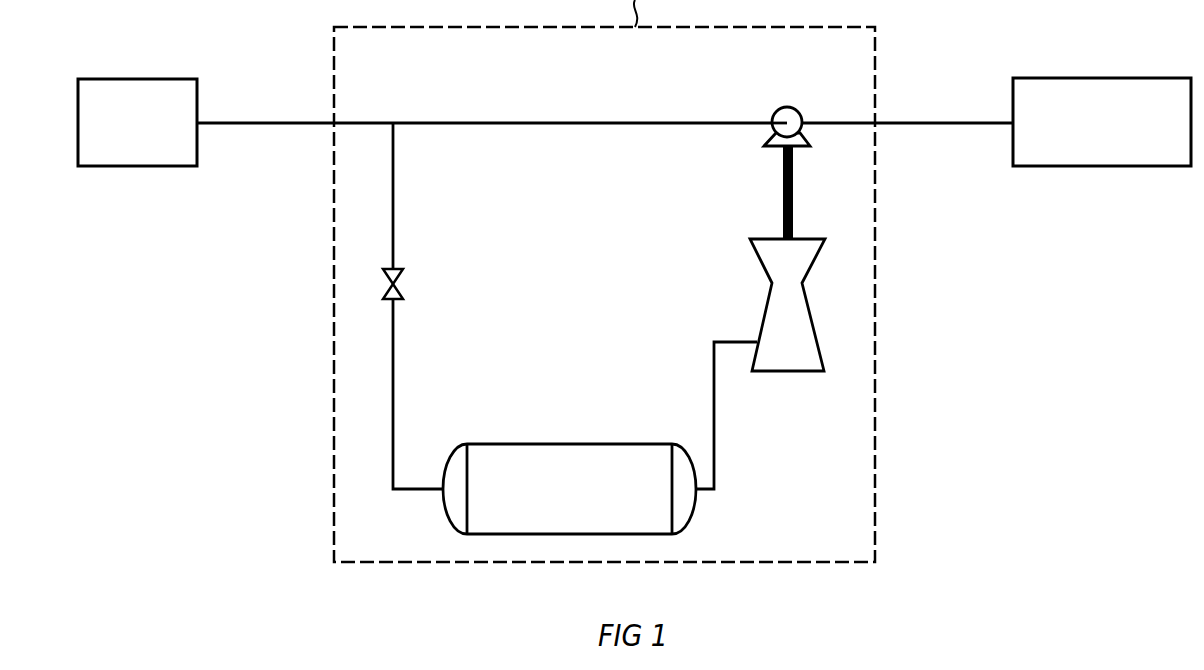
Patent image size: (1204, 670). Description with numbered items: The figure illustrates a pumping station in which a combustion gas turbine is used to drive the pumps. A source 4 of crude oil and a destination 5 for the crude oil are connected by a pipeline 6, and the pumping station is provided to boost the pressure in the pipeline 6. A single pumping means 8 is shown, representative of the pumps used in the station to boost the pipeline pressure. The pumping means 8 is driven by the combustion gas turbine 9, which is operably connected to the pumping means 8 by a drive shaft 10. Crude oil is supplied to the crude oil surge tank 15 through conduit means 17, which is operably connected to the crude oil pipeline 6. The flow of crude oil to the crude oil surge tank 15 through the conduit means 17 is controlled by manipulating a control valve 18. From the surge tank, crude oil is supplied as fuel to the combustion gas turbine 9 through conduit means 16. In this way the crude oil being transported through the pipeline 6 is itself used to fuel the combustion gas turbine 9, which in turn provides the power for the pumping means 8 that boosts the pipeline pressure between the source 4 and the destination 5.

The source 4 is at (137, 79).
The destination 5 is at (1068, 78).
The pipeline 6 is at (250, 122).
The pumping means 8 is at (787, 107).
The combustion gas turbine 9 is at (814, 316).
The drive shaft 10 is at (794, 192).
The crude oil surge tank 15 is at (571, 444).
The conduit means 16 is at (716, 418).
The conduit means 17 is at (394, 360).
The control valve 18 is at (405, 271).